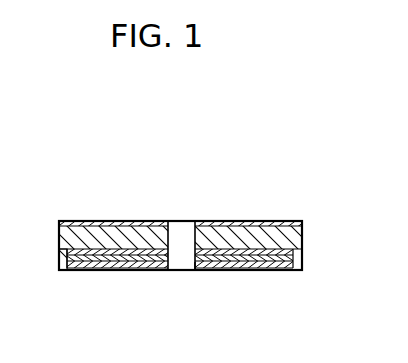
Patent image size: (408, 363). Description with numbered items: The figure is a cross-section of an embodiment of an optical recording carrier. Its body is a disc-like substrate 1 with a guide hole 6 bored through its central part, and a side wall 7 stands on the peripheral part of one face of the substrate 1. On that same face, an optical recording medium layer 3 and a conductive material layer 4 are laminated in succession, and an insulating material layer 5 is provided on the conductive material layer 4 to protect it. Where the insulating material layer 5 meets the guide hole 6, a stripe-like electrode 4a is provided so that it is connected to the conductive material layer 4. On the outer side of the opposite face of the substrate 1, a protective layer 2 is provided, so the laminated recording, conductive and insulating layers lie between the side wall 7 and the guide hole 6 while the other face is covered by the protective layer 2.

The substrate 1 is at (300, 230).
The protective layer 2 is at (295, 221).
The optical recording medium layer 3 is at (291, 250).
The conductive material layer 4 is at (302, 261).
The stripe-like electrode 4a is at (200, 270).
The insulating material layer 5 is at (284, 266).
The guide hole 6 is at (182, 223).
The side wall 7 is at (60, 258).